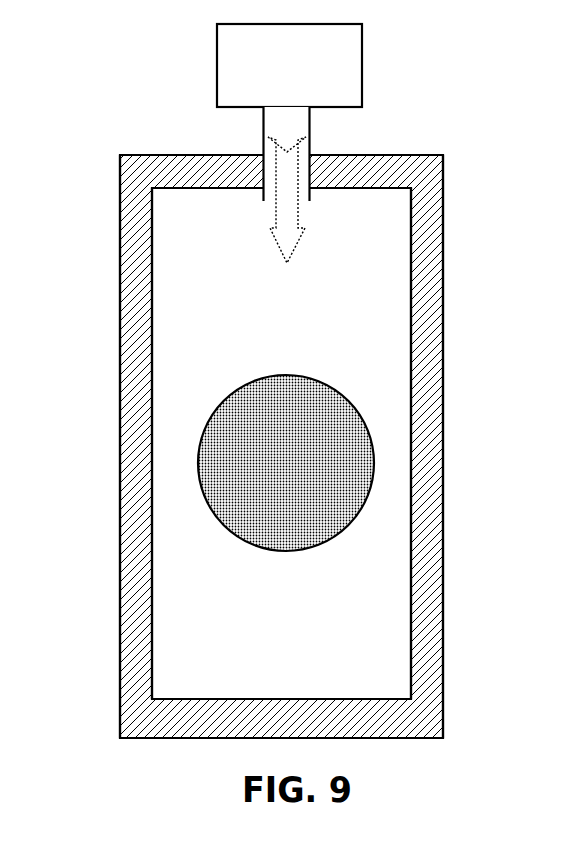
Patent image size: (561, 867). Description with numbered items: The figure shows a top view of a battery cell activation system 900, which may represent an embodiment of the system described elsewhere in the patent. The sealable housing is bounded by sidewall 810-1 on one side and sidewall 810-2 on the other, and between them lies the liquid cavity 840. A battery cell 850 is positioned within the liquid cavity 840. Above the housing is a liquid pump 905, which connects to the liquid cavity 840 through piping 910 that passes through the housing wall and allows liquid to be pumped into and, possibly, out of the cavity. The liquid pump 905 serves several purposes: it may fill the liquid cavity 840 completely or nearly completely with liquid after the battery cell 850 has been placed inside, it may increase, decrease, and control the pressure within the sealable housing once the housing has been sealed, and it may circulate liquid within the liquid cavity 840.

The battery cell activation system 900 is at (66, 150).
The liquid pump 905 is at (357, 103).
The piping 910 is at (263, 202).
The sidewall 810-1 is at (118, 447).
The sidewall 810-2 is at (445, 453).
The liquid cavity 840 is at (285, 625).
The battery cell 850 is at (252, 548).